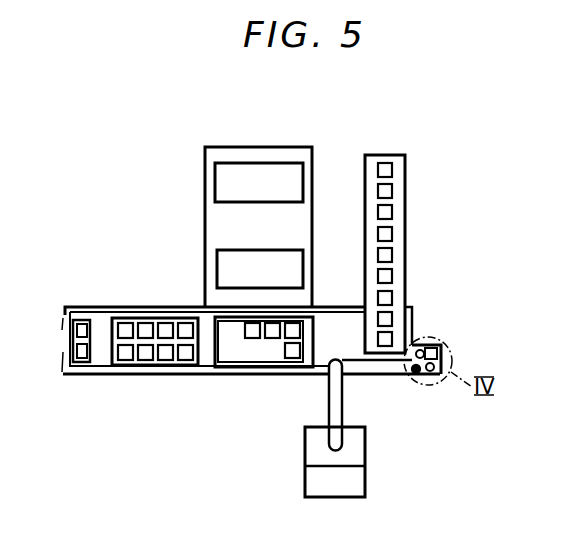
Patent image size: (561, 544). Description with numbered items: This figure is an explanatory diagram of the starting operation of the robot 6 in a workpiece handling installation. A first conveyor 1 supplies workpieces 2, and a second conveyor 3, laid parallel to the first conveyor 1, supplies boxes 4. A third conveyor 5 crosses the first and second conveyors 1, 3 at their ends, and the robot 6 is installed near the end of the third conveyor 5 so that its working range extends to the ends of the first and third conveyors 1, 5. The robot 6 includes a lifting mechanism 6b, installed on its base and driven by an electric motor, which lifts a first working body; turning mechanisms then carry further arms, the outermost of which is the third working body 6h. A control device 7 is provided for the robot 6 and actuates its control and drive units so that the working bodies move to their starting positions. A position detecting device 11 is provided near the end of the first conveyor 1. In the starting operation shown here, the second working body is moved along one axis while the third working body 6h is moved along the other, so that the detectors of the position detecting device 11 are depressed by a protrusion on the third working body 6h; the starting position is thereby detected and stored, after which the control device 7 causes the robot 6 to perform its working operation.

The first conveyor 1 is at (405, 211).
The workpieces 2 is at (392, 255).
The second conveyor 3 is at (205, 175).
The boxes 4 is at (267, 163).
The third conveyor 5 is at (103, 375).
The robot 6 is at (366, 441).
The lifting mechanism 6b is at (328, 403).
The third working body 6h is at (392, 376).
The control device 7 is at (366, 478).
The position detecting device 11 is at (440, 344).